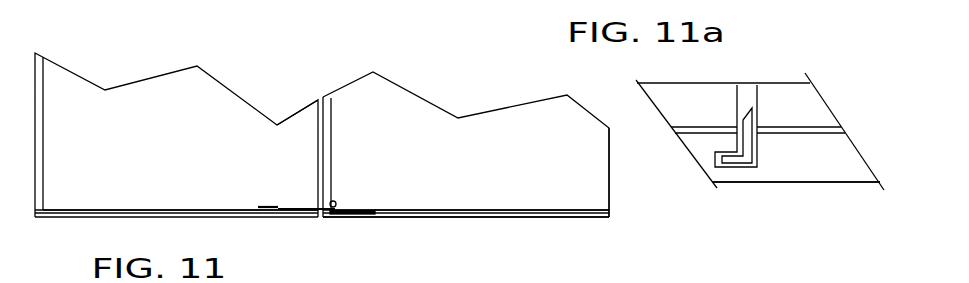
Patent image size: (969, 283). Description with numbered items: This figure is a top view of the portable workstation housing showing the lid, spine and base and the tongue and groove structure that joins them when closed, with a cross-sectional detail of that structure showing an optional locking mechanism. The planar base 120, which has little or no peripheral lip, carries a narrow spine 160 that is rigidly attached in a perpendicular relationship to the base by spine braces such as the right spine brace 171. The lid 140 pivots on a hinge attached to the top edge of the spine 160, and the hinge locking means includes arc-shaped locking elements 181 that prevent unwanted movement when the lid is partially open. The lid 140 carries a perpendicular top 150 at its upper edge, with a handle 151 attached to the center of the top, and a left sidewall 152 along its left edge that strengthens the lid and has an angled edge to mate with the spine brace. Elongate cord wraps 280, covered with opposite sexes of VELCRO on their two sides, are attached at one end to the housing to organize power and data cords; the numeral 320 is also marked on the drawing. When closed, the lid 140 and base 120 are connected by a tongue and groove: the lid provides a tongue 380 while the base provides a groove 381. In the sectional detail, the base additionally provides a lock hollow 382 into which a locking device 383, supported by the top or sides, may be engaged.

In FIG. 11, the planar base 120 is at (512, 175).
In FIG. 11a, the lid 140 is at (693, 93).
In FIG. 11, the top 150 is at (42, 105).
In FIG. 11, the handle 151 is at (478, 282).
In FIG. 11, the left sidewall 152 is at (222, 210).
In FIG. 11, the spine 160 is at (328, 120).
In FIG. 11, the right spine brace 171 is at (358, 210).
In FIG. 11, the arc-shaped locking element 181 is at (293, 203).
In FIG. 11a, the cord wrap 280 is at (793, 232).
In FIG. 11, the panel edge 320 is at (613, 203).
In FIG. 11, the tongue 380 is at (200, 212).
In FIG. 11, the groove 381 is at (447, 212).
In FIG. 11a, the lock hollow 382 is at (717, 163).
In FIG. 11a, the locking device 383 is at (730, 163).